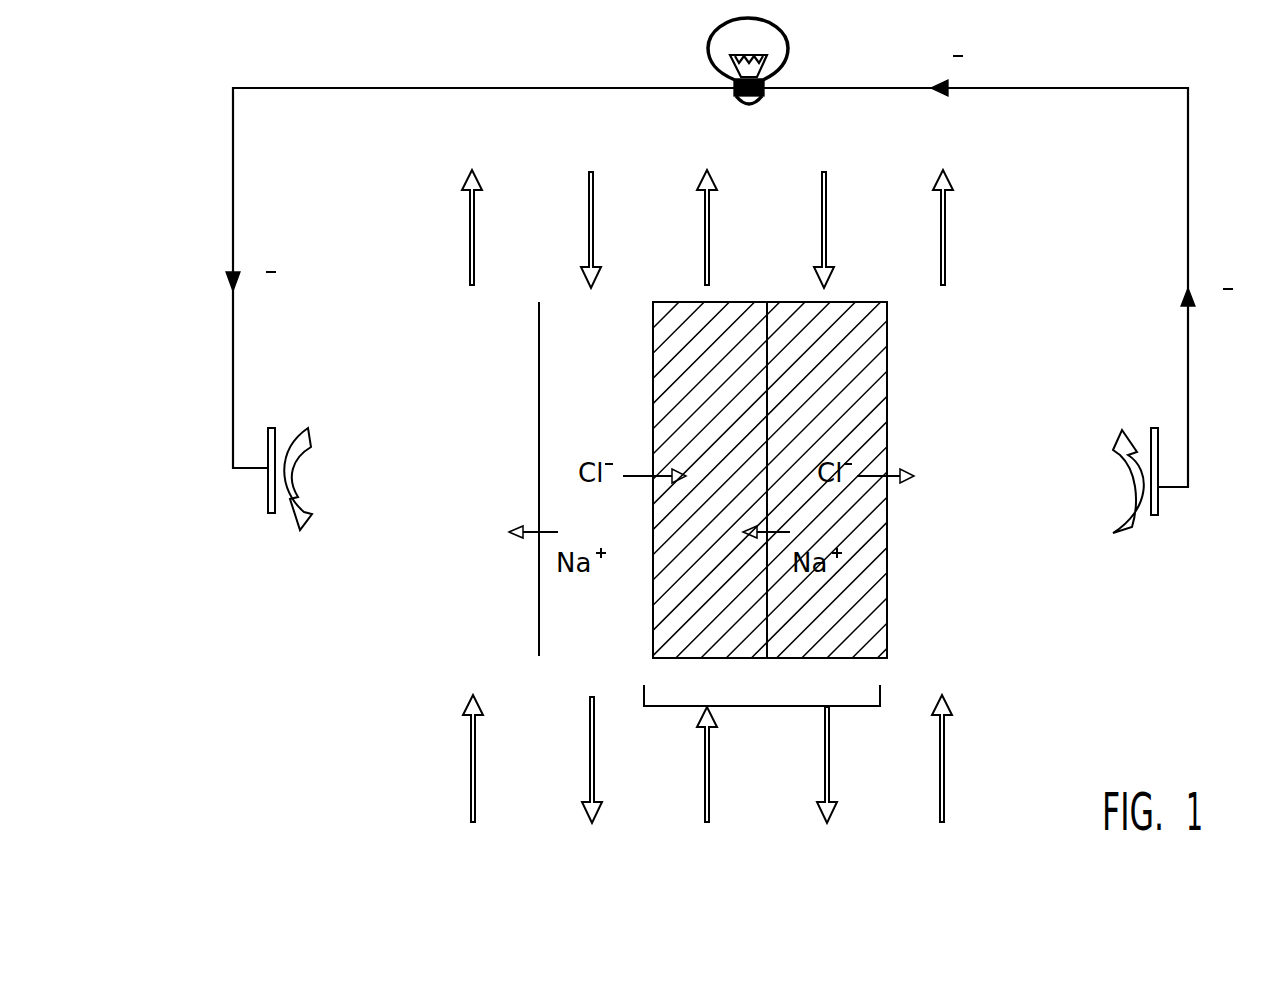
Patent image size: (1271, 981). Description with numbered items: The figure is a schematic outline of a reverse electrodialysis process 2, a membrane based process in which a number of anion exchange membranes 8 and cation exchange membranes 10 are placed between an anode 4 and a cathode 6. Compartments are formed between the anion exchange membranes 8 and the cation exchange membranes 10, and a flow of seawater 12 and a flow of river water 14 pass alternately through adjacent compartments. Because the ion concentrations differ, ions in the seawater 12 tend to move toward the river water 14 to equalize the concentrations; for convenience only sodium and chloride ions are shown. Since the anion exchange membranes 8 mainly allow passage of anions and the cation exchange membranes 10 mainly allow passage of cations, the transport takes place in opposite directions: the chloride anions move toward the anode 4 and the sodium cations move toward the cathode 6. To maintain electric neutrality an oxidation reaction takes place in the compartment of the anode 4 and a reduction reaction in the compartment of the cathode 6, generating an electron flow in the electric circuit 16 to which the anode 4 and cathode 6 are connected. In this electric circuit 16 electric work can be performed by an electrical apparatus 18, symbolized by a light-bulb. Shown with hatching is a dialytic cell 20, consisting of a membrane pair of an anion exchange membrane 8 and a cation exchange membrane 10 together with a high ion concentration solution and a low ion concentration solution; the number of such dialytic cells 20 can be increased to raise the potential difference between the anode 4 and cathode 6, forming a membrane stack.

The reverse electrodialysis process 2 is at (210, 92).
The anode 4 is at (1160, 500).
The cathode 6 is at (268, 488).
The anion exchange membrane 8 is at (653, 618).
The cation exchange membrane 10 is at (539, 584).
The flow of seawater 12 is at (593, 190).
The flow of river water 14 is at (474, 202).
The electric circuit 16 is at (593, 88).
The electrical apparatus 18 is at (778, 43).
The dialytic cell 20 is at (663, 707).